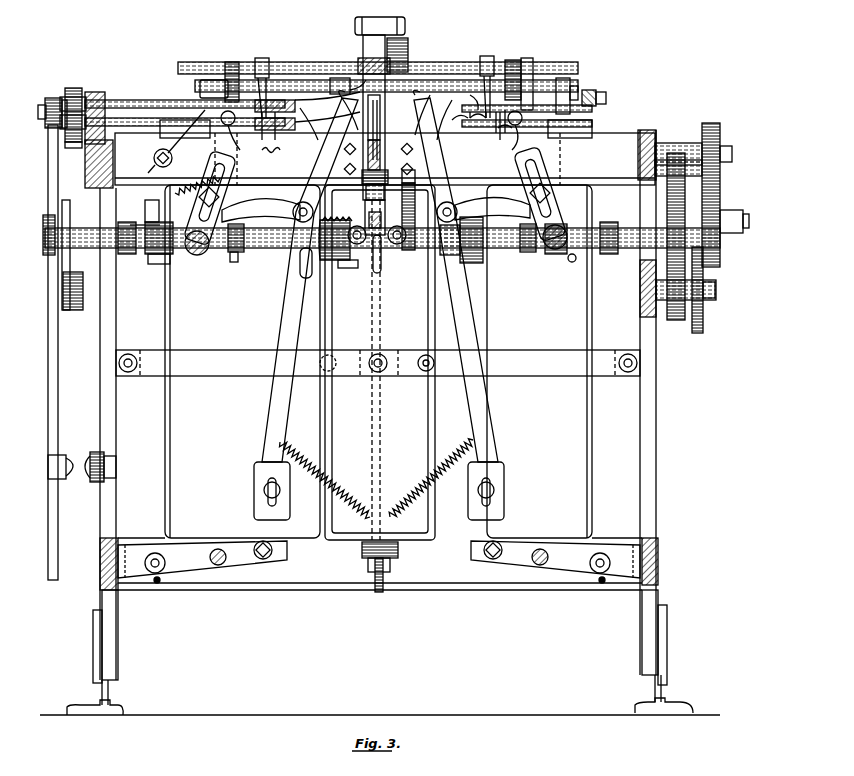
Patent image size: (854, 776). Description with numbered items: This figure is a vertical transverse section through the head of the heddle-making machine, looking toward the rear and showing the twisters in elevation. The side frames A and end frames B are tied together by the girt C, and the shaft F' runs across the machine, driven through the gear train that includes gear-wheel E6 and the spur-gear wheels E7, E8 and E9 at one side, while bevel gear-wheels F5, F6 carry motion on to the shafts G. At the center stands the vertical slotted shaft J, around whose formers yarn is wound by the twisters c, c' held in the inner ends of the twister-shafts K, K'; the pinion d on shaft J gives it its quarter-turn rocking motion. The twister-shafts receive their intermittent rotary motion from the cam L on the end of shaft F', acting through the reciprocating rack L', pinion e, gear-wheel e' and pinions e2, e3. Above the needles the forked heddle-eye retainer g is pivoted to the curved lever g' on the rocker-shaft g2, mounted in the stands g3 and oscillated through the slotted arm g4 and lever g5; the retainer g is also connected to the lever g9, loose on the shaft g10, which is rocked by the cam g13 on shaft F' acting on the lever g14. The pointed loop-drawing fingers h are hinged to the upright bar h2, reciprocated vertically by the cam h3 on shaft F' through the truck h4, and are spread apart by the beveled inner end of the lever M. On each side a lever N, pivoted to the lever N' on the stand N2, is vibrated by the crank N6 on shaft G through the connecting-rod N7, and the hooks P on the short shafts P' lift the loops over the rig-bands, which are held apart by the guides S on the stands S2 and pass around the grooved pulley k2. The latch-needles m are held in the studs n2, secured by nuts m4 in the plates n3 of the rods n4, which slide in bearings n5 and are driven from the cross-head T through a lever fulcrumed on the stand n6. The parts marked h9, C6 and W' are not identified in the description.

The side frames A is at (380, 403).
The end frames B is at (443, 418).
The tie-girt C is at (385, 147).
The heddle-eye retainer g is at (380, 108).
The curved lever g' is at (398, 55).
The rocker-shaft g2 is at (378, 59).
The stands g3 is at (371, 81).
The slotted arm g4 is at (533, 68).
The lever g5 is at (567, 91).
The lever g9 is at (352, 78).
The shaft g10 is at (460, 102).
The cam g13 is at (234, 268).
The lever g14 is at (212, 85).
The pointed fingers h is at (378, 185).
The upright bar h2 is at (412, 185).
The cam h3 is at (416, 216).
The truck h4 is at (486, 79).
The hanger h9 is at (263, 79).
The vertical slotted shaft J is at (378, 108).
The twister-shaft K is at (172, 97).
The twister-shaft K' is at (172, 116).
The pinion e is at (50, 104).
The gear-wheel e' is at (76, 104).
The pinion e2 is at (64, 98).
The pinion e3 is at (72, 151).
The cam L is at (63, 255).
The reciprocating rack L' is at (75, 352).
The shaft F' is at (397, 239).
The bevel gear-wheel F5 is at (304, 264).
The bevel gear-wheel F6 is at (348, 272).
The gear-wheel E6 is at (667, 188).
The spur-gear wheel E7 is at (720, 250).
The spur-gear wheel E8 is at (720, 190).
The spur-gear wheel E9 is at (720, 130).
The shaft G is at (348, 236).
The pin C6 is at (568, 267).
The lever M is at (377, 230).
The pinion d is at (375, 214).
The adjustable grooved pulley k2 is at (380, 396).
The stand n6 is at (445, 240).
The lever N is at (379, 305).
The lever N' is at (379, 562).
The stand N2 is at (379, 561).
The crank N6 is at (225, 168).
The connecting-rod N7 is at (377, 213).
The rig-band guide S is at (527, 110).
The stand S2 is at (376, 129).
The hook P is at (373, 130).
The short shaft P' is at (393, 94).
The cross-head T is at (477, 108).
The wheel W' is at (453, 115).
The latch-needle m is at (508, 127).
The nut m4 is at (280, 156).
The stud n2 is at (501, 127).
The plate n3 is at (485, 127).
The rod n4 is at (259, 131).
The bearing n5 is at (385, 134).
The twister c is at (307, 103).
The twister c' is at (307, 120).